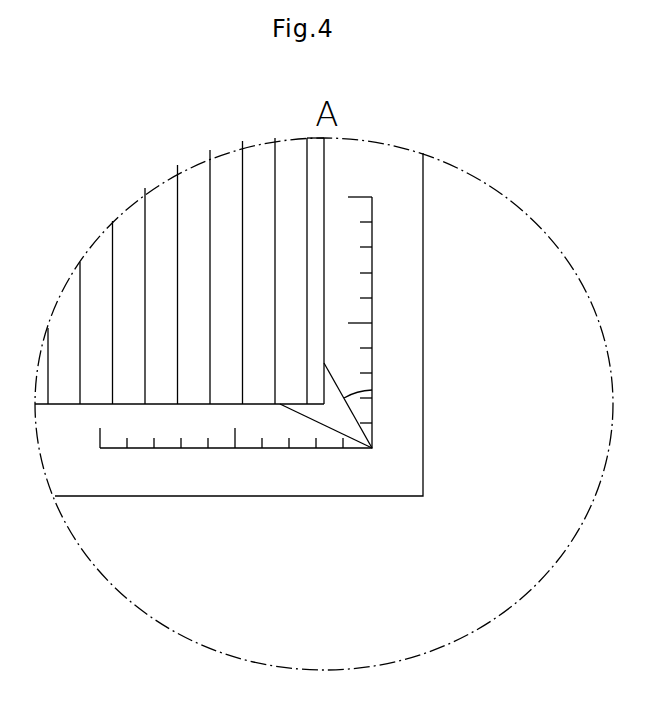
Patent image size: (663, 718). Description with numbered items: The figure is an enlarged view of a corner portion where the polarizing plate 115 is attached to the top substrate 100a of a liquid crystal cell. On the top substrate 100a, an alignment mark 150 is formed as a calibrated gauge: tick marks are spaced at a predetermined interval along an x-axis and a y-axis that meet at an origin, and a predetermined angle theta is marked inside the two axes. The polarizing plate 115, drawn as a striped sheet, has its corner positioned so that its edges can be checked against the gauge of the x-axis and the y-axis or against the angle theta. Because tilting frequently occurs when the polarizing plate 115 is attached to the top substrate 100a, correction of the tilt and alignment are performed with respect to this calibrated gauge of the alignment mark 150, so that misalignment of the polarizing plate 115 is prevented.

The polarizing plate 115 is at (302, 180).
The alignment mark 150 is at (372, 260).
The top substrate 100a is at (405, 350).